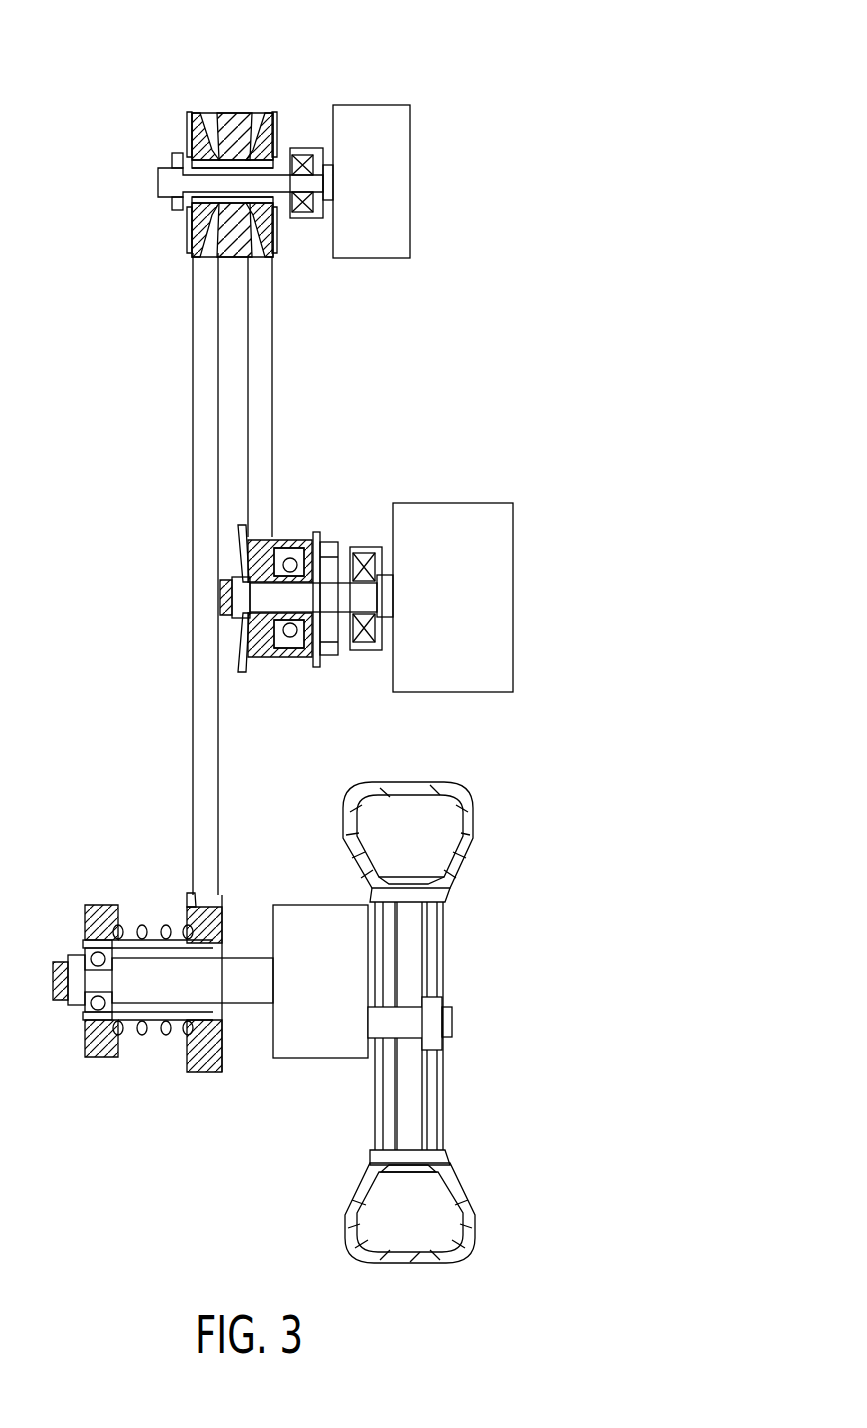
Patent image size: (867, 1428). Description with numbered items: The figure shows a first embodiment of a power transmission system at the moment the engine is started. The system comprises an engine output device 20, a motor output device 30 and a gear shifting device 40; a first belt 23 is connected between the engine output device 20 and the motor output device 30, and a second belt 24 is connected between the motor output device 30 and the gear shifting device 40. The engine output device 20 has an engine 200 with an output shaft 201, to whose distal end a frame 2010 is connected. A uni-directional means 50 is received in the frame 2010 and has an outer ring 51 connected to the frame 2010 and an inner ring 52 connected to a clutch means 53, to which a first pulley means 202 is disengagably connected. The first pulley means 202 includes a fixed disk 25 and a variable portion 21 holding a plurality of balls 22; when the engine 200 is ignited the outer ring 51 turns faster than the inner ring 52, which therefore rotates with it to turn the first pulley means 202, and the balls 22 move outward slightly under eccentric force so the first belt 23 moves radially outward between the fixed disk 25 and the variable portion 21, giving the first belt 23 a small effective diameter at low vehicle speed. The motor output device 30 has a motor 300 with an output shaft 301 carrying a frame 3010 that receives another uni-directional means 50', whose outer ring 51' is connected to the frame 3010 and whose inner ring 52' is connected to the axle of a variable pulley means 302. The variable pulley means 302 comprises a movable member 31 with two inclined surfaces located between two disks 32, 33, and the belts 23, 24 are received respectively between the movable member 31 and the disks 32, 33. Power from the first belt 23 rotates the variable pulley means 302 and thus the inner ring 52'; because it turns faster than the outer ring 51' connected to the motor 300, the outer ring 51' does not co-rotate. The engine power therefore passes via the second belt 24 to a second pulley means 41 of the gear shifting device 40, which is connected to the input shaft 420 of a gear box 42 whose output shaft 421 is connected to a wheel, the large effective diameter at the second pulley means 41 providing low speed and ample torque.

The engine output device 20 is at (383, 540).
The engine 200 is at (470, 507).
The output shaft 201 is at (385, 620).
The frame 2010 is at (372, 655).
The first pulley means 202 is at (277, 533).
The variable portion 21 is at (298, 655).
The balls 22 is at (280, 655).
The first belt 23 is at (265, 450).
The second belt 24 is at (200, 545).
The fixed disk 25 is at (243, 668).
The motor output device 30 is at (290, 105).
The motor 300 is at (395, 112).
The output shaft 301 is at (330, 190).
The frame 3010 is at (300, 150).
The variable pulley means 302 is at (172, 140).
The movable member 31 is at (235, 115).
The disk 32 is at (277, 113).
The disk 33 is at (192, 113).
The uni-directional means 50 is at (366, 608).
The outer ring 51 is at (360, 568).
The inner ring 52 is at (376, 525).
The clutch means 53 is at (320, 540).
The uni-directional means 50' is at (353, 182).
The outer ring 51' is at (316, 263).
The inner ring 52' is at (299, 228).
The gear shifting device 40 is at (250, 1032).
The second pulley means 41 is at (190, 897).
The gear box 42 is at (325, 1055).
The input shaft 420 is at (225, 970).
The output shaft 421 is at (400, 1020).